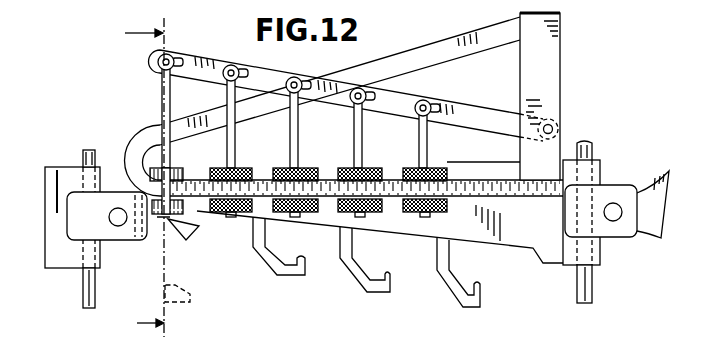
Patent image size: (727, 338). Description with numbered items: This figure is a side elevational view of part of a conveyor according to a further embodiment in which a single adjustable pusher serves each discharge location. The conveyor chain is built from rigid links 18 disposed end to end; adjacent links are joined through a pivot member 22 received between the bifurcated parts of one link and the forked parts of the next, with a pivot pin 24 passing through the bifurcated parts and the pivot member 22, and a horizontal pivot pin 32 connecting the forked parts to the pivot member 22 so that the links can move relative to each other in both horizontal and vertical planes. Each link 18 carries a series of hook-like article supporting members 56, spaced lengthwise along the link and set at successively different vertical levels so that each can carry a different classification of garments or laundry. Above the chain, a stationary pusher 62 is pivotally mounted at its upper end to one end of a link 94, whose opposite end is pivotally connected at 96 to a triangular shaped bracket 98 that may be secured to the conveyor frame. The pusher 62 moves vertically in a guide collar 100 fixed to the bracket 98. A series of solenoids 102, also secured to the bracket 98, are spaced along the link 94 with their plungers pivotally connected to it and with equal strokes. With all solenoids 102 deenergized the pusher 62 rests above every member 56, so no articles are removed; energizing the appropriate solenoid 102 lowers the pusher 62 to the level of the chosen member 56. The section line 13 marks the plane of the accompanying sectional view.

The section line 13- 13 is at (149, 175).
The rigid link 18 is at (50, 167).
The pivot member 22 is at (105, 240).
The pivot pin 24 is at (85, 289).
The horizontal pivot pin 32 is at (114, 208).
The article supporting member 56 is at (256, 260).
The pusher 62 is at (168, 223).
The link 94 is at (269, 77).
The pivotal connection 96 is at (553, 125).
The triangular shaped bracket 98 is at (557, 44).
The guide collar 100 is at (181, 168).
The solenoid 102 is at (343, 168).